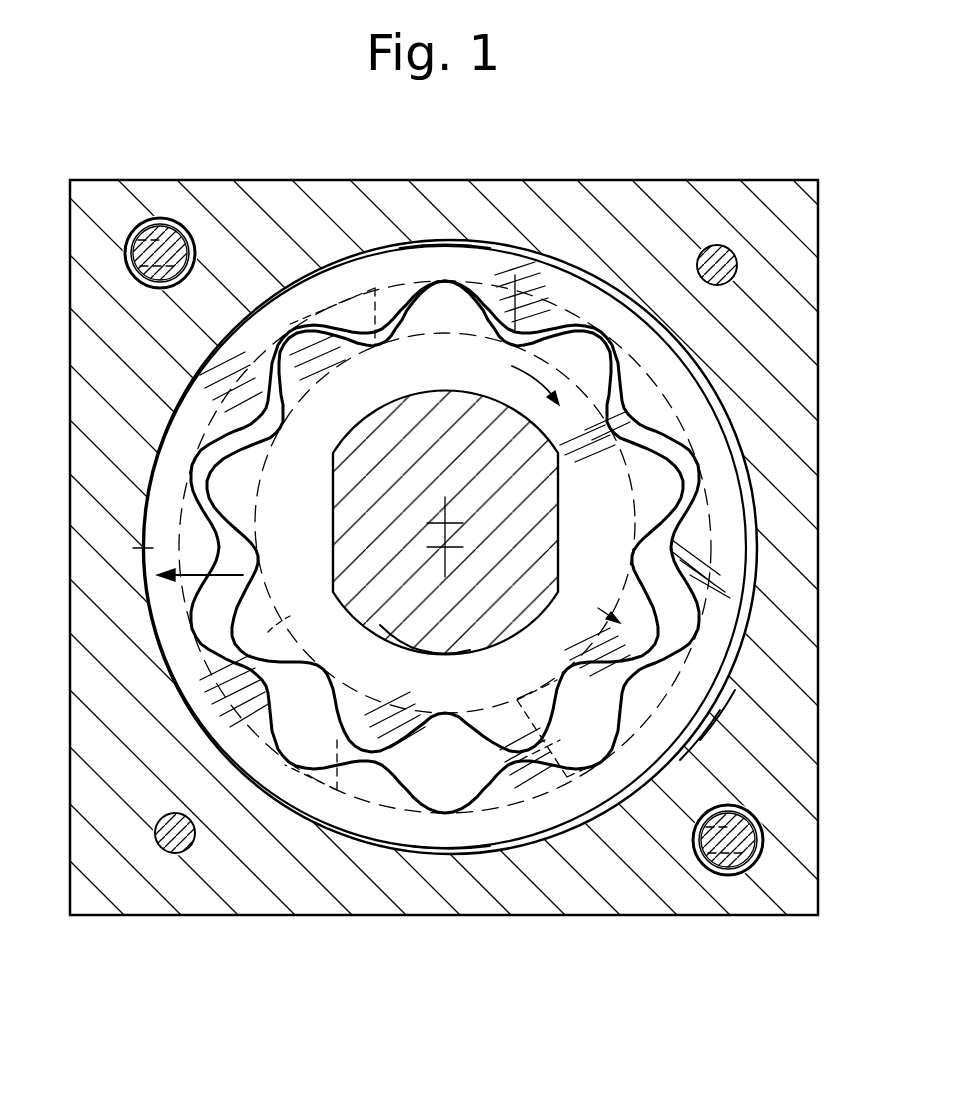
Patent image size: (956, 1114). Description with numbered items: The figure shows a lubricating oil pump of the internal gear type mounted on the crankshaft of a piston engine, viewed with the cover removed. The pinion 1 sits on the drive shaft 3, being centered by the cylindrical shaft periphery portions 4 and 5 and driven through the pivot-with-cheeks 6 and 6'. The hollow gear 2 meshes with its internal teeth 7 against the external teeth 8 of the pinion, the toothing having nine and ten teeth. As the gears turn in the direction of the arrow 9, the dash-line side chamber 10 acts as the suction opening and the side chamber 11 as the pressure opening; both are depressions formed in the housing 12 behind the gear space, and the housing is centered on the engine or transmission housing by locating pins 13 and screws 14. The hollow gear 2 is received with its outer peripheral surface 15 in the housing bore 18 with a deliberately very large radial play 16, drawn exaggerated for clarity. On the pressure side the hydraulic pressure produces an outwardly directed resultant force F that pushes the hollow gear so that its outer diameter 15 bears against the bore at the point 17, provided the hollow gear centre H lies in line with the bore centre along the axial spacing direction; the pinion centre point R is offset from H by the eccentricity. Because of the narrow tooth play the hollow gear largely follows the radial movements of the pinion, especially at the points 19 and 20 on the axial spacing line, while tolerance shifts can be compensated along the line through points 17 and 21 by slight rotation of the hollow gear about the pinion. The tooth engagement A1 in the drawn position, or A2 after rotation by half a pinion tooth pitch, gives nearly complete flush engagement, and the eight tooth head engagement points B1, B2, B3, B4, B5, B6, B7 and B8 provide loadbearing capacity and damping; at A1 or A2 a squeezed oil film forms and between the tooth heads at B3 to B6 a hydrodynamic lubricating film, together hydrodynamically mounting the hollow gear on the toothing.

The pinion 1 is at (566, 694).
The hollow gear 2 is at (706, 432).
The drive shaft 3 is at (395, 617).
The cylindrical shaft periphery portion 4 is at (392, 405).
The cylindrical shaft periphery portion 5 is at (480, 656).
The pivot-with-cheeks 6 is at (309, 522).
The pivot-with-cheeks 6' is at (584, 522).
The internal teeth 7 is at (506, 762).
The external teeth 8 is at (386, 720).
The arrow 9 is at (538, 378).
The side chamber 10 is at (600, 608).
The side chamber 11 is at (288, 600).
The housing 12 is at (797, 757).
The locating pins 13 is at (716, 246).
The screws 14 is at (152, 222).
The outer peripheral surface 15 is at (750, 504).
The radial play 16 is at (740, 652).
The point 17 is at (143, 550).
The housing bore 18 is at (722, 694).
The point 19 is at (440, 243).
The point 20 is at (463, 856).
The point 21 is at (752, 538).
The tooth engagement A1 is at (447, 280).
The tooth engagement A2 is at (500, 334).
The tooth head engagement point B1 is at (612, 382).
The tooth head engagement point B2 is at (720, 548).
The tooth head engagement point B3 is at (658, 705).
The tooth head engagement point B4 is at (566, 782).
The tooth head engagement point B5 is at (406, 796).
The tooth head engagement point B6 is at (212, 718).
The tooth head engagement point B7 is at (212, 476).
The tooth head engagement point B8 is at (262, 350).
The force F is at (244, 574).
The pinion centre point R is at (447, 522).
The hollow gear centre H is at (447, 548).